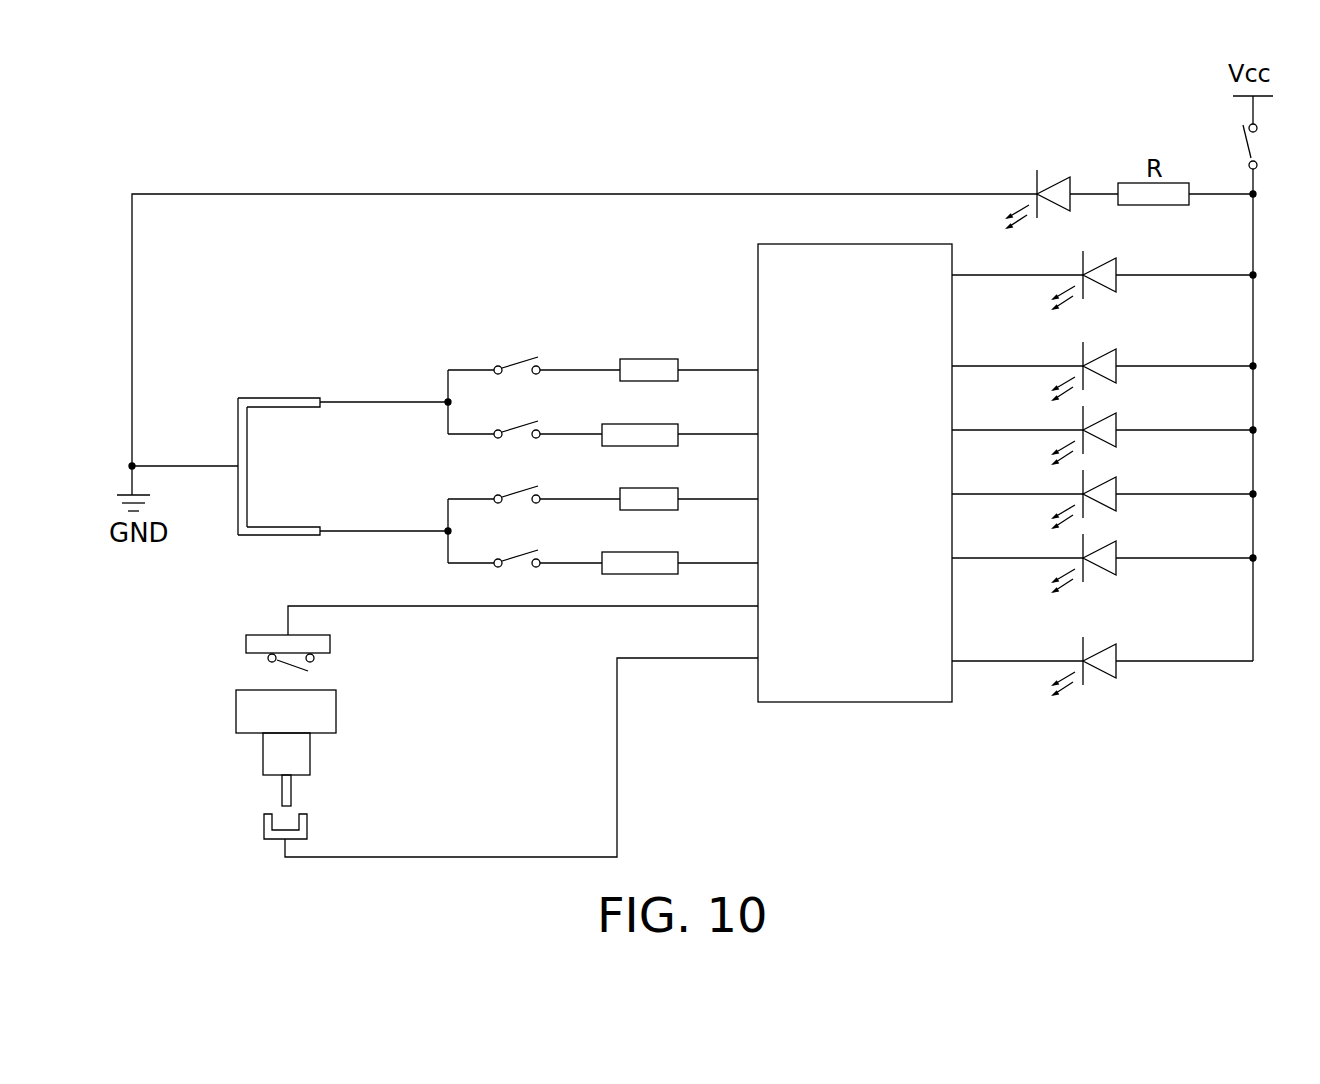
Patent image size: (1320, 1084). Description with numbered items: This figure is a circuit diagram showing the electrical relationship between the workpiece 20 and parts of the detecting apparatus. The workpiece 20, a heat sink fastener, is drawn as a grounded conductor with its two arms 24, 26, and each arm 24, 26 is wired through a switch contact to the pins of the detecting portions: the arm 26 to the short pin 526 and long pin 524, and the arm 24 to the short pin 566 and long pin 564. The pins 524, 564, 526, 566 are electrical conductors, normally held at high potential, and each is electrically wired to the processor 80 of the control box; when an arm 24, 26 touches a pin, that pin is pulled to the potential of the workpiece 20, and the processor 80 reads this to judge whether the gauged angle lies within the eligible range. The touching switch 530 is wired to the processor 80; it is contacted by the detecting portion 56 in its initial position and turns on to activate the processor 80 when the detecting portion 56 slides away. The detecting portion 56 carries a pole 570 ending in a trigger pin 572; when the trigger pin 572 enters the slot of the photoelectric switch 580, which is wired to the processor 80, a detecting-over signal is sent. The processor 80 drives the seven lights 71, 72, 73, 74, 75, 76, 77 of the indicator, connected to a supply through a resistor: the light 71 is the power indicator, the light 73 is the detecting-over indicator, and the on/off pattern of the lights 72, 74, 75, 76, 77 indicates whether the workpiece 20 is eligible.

The workpiece 20 is at (220, 421).
The arm 26 is at (277, 400).
The arm 24 is at (277, 535).
The short pin 526 is at (635, 364).
The long pin 524 is at (650, 433).
The short pin 566 is at (648, 498).
The long pin 564 is at (650, 565).
The touching switch 530 is at (323, 644).
The detecting portion 56 is at (323, 707).
The pole 570 is at (297, 748).
The trigger pin 572 is at (291, 787).
The photoelectric switch 580 is at (266, 829).
The processor 80 is at (865, 662).
The light 71 is at (1058, 185).
The light 72 is at (1107, 271).
The light 73 is at (1107, 657).
The light 74 is at (1107, 362).
The light 75 is at (1107, 426).
The light 76 is at (1107, 490).
The light 77 is at (1107, 554).